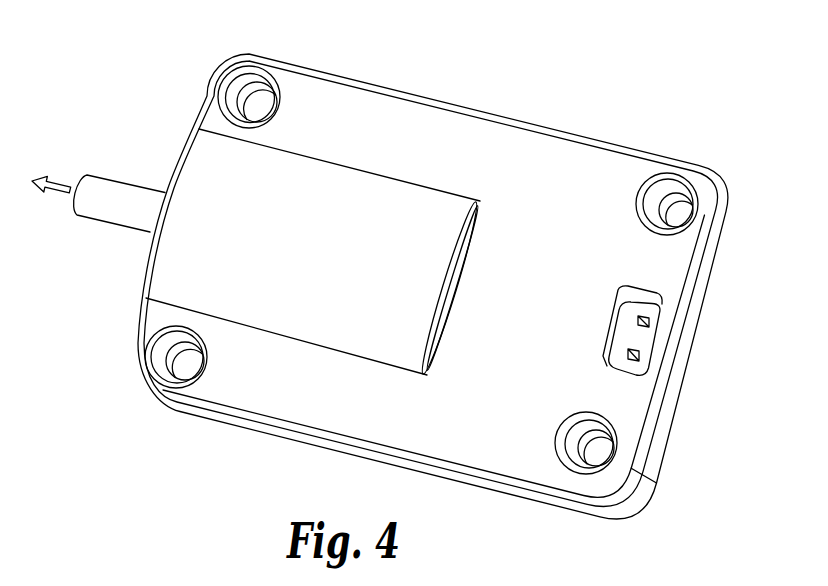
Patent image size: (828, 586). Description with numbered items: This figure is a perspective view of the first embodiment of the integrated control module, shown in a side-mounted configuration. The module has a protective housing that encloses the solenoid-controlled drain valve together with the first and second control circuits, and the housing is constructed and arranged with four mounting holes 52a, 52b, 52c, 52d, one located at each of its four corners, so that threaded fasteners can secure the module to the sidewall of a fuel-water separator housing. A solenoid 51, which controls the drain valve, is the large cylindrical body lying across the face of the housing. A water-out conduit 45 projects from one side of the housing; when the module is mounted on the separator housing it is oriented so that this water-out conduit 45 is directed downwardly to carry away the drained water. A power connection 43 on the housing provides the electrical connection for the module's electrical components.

The power connection 43 is at (647, 339).
The water-out conduit 45 is at (105, 203).
The solenoid 51 is at (246, 262).
The mounting hole 52a is at (188, 362).
The mounting hole 52b is at (256, 100).
The mounting hole 52c is at (677, 212).
The mounting hole 52d is at (595, 455).